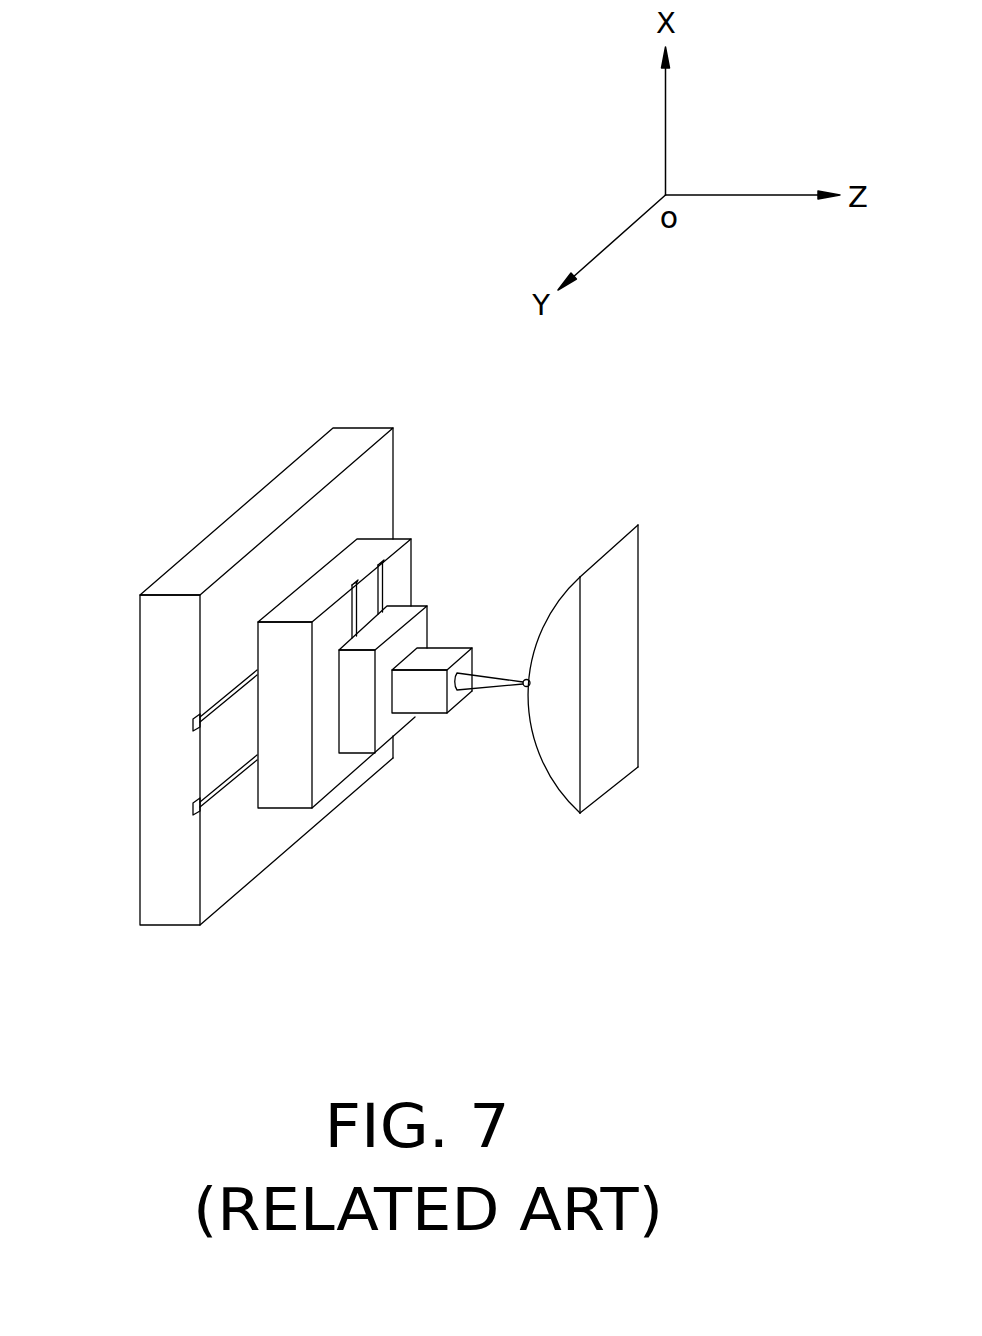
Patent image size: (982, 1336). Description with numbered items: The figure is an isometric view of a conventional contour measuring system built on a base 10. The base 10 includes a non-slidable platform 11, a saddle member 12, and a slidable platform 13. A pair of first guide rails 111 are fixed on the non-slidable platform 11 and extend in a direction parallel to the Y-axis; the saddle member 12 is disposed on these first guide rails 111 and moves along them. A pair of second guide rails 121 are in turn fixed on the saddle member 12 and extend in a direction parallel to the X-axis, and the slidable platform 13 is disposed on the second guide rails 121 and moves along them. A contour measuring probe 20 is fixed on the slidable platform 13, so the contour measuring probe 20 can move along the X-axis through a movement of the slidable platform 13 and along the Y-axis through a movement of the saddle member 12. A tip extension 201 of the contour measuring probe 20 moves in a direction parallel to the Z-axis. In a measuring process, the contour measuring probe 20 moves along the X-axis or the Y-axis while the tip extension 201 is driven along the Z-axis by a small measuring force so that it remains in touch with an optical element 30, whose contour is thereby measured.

The base 10 is at (333, 390).
The non-slidable platform 11 is at (163, 842).
The first guide rails 111 is at (207, 715).
The saddle member 12 is at (295, 792).
The second guide rails 121 is at (352, 583).
The slidable platform 13 is at (365, 730).
The contour measuring probe 20 is at (445, 657).
The tip extension 201 is at (488, 687).
The optical element 30 is at (603, 755).